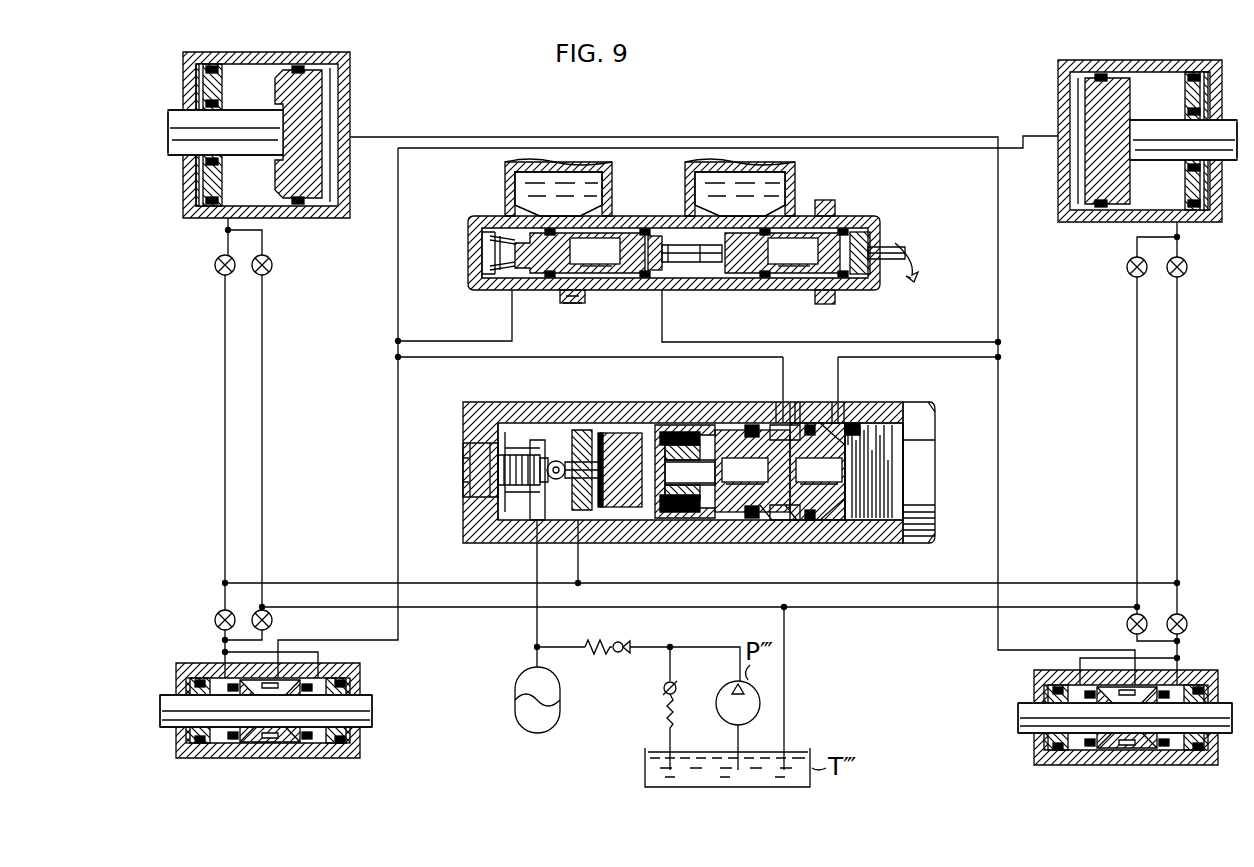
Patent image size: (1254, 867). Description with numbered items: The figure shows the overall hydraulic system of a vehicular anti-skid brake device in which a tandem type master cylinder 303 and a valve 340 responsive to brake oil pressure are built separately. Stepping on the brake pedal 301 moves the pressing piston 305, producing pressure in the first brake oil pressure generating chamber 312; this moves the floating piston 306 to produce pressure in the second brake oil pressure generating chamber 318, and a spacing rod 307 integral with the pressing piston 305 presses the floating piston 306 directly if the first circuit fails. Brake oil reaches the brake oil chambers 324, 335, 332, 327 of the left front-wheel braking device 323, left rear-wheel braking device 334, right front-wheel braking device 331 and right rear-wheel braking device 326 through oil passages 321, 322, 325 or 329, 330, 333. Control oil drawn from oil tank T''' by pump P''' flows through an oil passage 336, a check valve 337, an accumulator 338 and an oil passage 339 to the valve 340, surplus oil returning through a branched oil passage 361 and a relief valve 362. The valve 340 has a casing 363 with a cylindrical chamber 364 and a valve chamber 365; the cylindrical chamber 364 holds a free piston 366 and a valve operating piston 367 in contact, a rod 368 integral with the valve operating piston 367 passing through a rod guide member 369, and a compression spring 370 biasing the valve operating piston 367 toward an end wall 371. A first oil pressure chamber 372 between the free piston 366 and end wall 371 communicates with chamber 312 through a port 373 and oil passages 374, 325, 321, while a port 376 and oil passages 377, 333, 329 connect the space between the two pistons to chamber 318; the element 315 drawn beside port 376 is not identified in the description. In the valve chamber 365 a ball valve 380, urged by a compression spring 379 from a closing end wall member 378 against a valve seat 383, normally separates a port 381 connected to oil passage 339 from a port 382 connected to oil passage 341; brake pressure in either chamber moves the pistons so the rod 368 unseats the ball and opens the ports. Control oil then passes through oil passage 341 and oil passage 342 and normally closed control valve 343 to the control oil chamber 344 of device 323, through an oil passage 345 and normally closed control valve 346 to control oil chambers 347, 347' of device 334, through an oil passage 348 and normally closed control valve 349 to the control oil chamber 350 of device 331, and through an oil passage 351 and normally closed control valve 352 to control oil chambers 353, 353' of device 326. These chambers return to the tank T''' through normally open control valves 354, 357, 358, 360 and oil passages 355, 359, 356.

The brake pedal 301 is at (906, 286).
The tandem type master cylinder 303 is at (697, 243).
The pressing piston 305 is at (782, 253).
The floating piston 306 is at (580, 253).
The spacing rod 307 is at (736, 266).
The first brake oil pressure generating chamber 312 is at (700, 272).
The port 315 is at (804, 400).
The second brake oil pressure generating chamber 318 is at (500, 276).
The oil passage 321 is at (662, 325).
The oil passage 322 is at (998, 305).
The left front-wheel braking device 323 is at (290, 117).
The brake oil chamber 324 is at (330, 106).
The oil passage 325 is at (998, 510).
The right rear-wheel braking device 326 is at (1121, 736).
The brake oil chamber 327 is at (1133, 752).
The oil passage 329 is at (512, 326).
The oil passage 330 is at (398, 312).
The right front-wheel braking device 331 is at (1117, 119).
The brake oil chamber 332 is at (1070, 112).
The oil passage 333 is at (398, 504).
The left rear-wheel braking device 334 is at (280, 731).
The brake oil chamber 335 is at (282, 748).
The oil passage 336 is at (700, 651).
The check valve 337 is at (608, 644).
The accumulator 338 is at (560, 690).
The oil passage 339 is at (537, 580).
The valve responsive to brake oil pressure 340 is at (698, 459).
The oil passage 341 is at (583, 585).
The oil passage 342 is at (225, 428).
The normally closed control valve 343 is at (215, 265).
The control oil chamber 344 is at (262, 190).
The oil passage 345 is at (225, 583).
The normally closed control valve 346 is at (215, 621).
The control oil chamber 347 is at (219, 735).
The control oil chamber 347' is at (327, 735).
The oil passage 348 is at (1177, 455).
The normally closed control valve 349 is at (1187, 267).
The control oil chamber 350 is at (1158, 193).
The oil passage 351 is at (1177, 593).
The normally closed control valve 352 is at (1187, 624).
The control oil chamber 353 is at (1189, 741).
The control oil chamber 353' is at (1085, 741).
The normally open control valve 354 is at (272, 265).
The oil passage 355 is at (262, 428).
The oil passage 356 is at (784, 675).
The normally open control valve 357 is at (272, 622).
The normally open control valve 358 is at (1127, 267).
The oil passage 359 is at (1137, 455).
The normally open control valve 360 is at (1127, 625).
The oil passage 361 is at (676, 670).
The relief valve 362 is at (656, 694).
The casing 363 is at (582, 424).
The cylindrical chamber 364 is at (790, 522).
The valve chamber 365 is at (508, 442).
The free piston 366 is at (818, 471).
The valve operating piston 367 is at (752, 471).
The rod 368 is at (640, 460).
The rod guide member 369 is at (655, 515).
The compression spring 370 is at (690, 500).
The end wall 371 is at (895, 475).
The first oil pressure chamber 372 is at (850, 405).
The port 373 is at (836, 400).
The oil passage 374 is at (950, 356).
The port 376 is at (780, 402).
The oil passage 377 is at (608, 350).
The closing end wall member 378 is at (463, 470).
The compression spring 379 is at (548, 462).
The ball valve 380 is at (568, 460).
The port 381 is at (537, 528).
The port 382 is at (578, 528).
The valve seat 383 is at (606, 490).